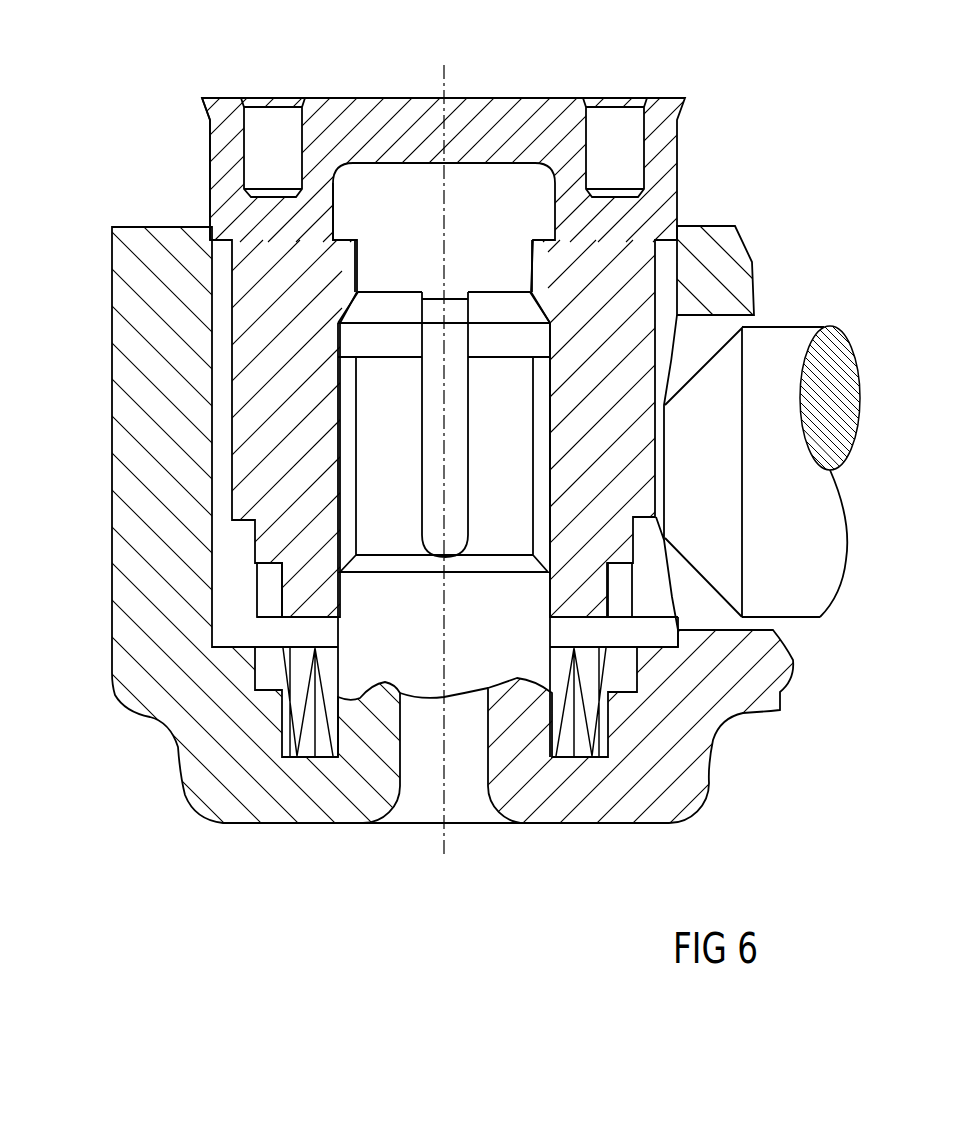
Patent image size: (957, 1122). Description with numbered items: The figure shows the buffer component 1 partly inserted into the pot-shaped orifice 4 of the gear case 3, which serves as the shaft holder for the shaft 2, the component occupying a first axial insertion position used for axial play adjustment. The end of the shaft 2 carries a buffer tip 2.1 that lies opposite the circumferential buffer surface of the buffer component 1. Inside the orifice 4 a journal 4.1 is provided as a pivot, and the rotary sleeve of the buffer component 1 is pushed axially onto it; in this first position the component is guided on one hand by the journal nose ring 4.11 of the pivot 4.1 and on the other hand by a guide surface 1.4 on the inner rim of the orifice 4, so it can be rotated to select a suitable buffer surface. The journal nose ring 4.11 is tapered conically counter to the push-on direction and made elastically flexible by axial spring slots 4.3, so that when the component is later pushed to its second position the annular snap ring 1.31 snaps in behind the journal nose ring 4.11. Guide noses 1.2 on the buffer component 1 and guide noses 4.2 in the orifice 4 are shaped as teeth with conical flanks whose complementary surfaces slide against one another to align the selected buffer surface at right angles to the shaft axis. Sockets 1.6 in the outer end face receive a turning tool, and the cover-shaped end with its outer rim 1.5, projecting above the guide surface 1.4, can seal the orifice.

The buffer component 1 is at (432, 145).
The guide noses 1.2 is at (620, 590).
The annular snap ring 1.31 is at (330, 268).
The guide surface 1.4 is at (210, 160).
The outer rim 1.5 is at (202, 99).
The sockets 1.6 is at (272, 167).
The shaft 2 is at (797, 575).
The buffer tip 2.1 is at (662, 482).
The gear case 3 is at (172, 385).
The orifice 4 is at (233, 565).
The journal 4.1 is at (498, 512).
The journal nose ring 4.11 is at (502, 338).
The guide noses 4.2 is at (570, 713).
The axial spring slots 4.3 is at (437, 518).